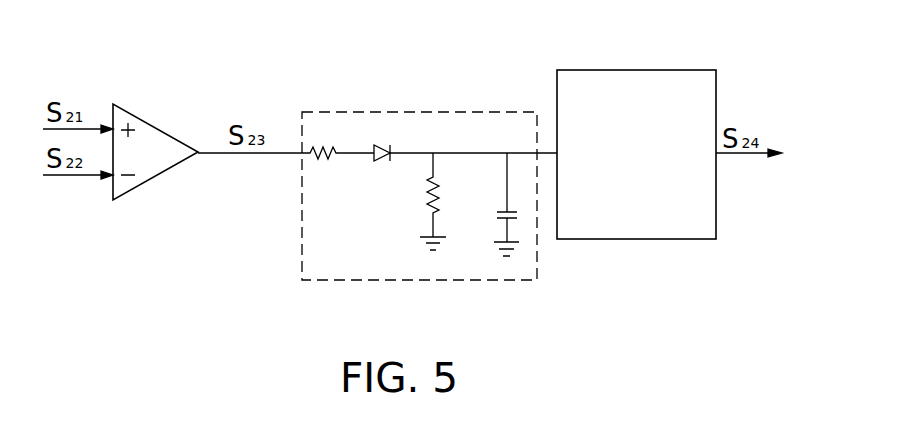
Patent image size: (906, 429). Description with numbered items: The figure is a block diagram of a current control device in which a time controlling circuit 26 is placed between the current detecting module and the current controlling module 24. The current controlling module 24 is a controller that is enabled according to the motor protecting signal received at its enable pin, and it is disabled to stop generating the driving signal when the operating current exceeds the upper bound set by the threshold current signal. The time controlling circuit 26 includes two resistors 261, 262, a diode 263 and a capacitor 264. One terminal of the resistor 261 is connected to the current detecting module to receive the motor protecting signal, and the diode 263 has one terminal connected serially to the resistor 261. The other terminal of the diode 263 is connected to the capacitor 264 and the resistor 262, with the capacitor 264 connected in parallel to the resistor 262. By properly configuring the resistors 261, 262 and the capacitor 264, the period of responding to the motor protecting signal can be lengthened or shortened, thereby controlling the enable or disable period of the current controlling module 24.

The current controlling module 24 is at (636, 72).
The time controlling circuit 26 is at (443, 112).
The resistor 261 is at (322, 149).
The resistor 262 is at (428, 200).
The diode 263 is at (388, 146).
The capacitor 264 is at (509, 217).